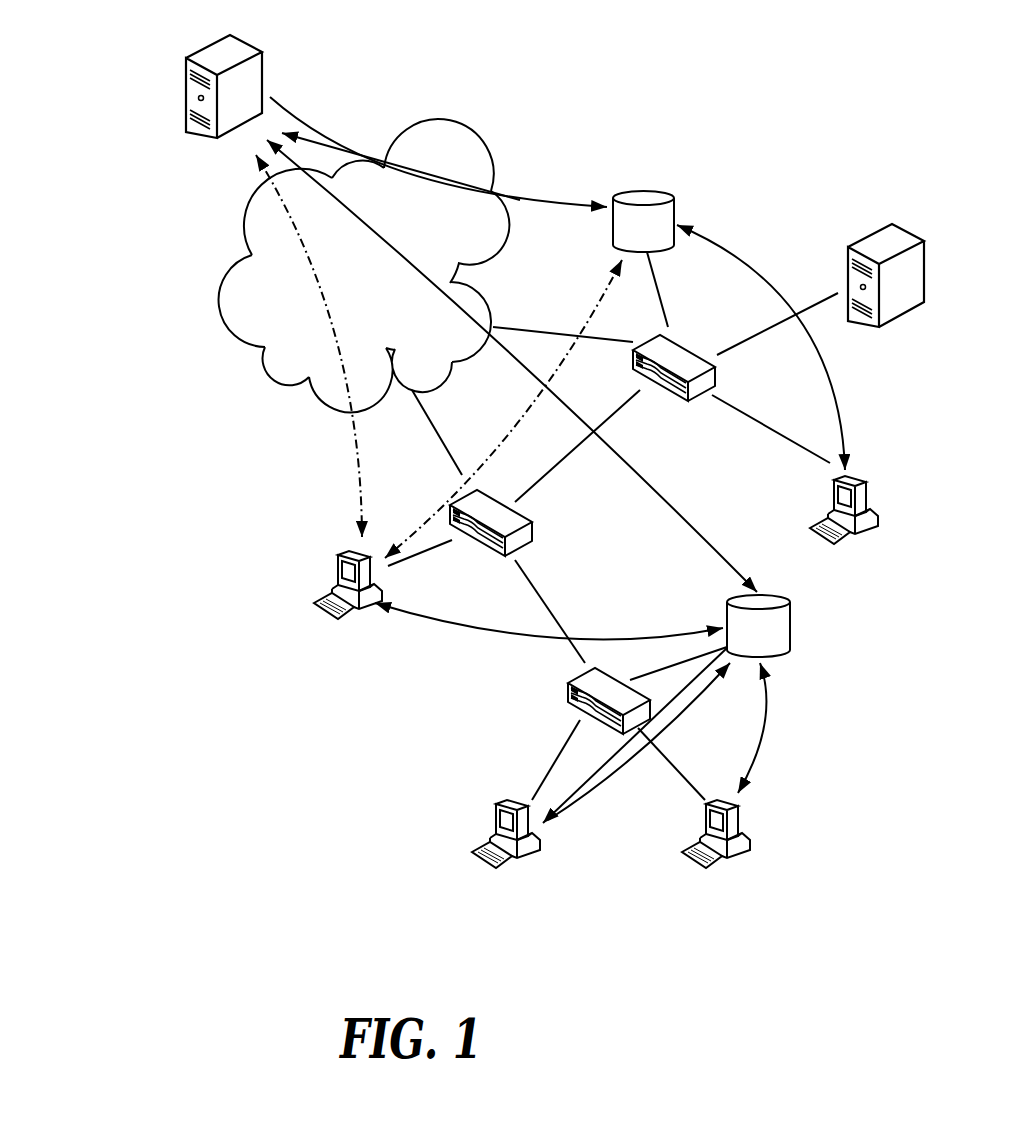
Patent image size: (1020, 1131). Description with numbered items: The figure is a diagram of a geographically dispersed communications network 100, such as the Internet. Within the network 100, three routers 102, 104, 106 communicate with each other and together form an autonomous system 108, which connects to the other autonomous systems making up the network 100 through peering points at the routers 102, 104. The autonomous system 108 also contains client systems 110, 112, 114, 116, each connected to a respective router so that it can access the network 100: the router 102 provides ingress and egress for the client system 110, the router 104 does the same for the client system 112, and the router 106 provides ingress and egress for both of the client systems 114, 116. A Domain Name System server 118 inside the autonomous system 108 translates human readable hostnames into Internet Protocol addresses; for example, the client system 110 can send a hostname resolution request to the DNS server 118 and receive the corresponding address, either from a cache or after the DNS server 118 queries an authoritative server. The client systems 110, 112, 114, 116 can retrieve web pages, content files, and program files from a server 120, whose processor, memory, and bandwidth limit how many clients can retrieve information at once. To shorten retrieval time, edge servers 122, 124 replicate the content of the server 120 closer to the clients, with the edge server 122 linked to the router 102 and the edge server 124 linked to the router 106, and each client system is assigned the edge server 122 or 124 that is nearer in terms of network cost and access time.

The network 100 is at (197, 317).
The router 102 is at (683, 352).
The router 104 is at (503, 556).
The router 106 is at (570, 686).
The autonomous system 108 is at (727, 157).
The client system 110 is at (836, 479).
The client system 112 is at (340, 556).
The client system 114 is at (497, 800).
The client system 116 is at (705, 800).
The Domain Name System server 118 is at (868, 252).
The server 120 is at (207, 63).
The edge server 122 is at (614, 246).
The edge server 124 is at (793, 628).